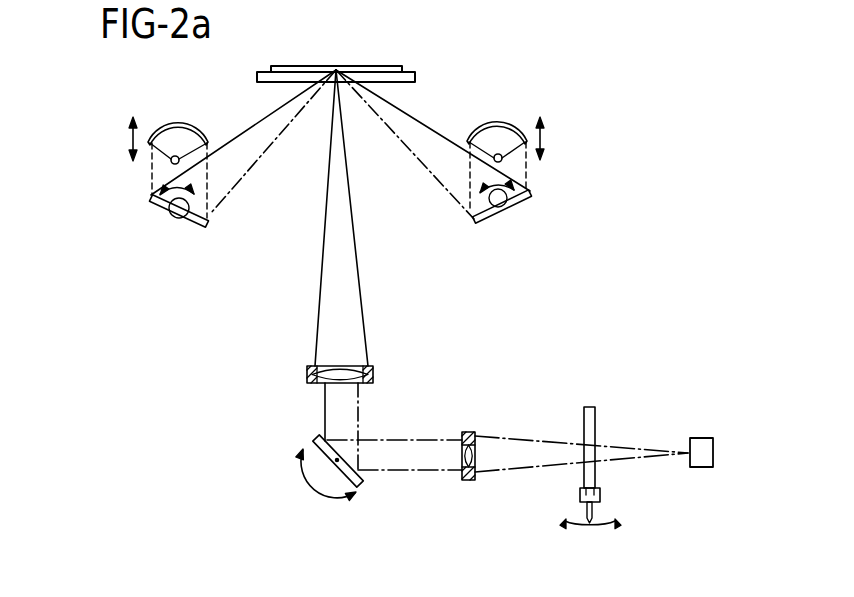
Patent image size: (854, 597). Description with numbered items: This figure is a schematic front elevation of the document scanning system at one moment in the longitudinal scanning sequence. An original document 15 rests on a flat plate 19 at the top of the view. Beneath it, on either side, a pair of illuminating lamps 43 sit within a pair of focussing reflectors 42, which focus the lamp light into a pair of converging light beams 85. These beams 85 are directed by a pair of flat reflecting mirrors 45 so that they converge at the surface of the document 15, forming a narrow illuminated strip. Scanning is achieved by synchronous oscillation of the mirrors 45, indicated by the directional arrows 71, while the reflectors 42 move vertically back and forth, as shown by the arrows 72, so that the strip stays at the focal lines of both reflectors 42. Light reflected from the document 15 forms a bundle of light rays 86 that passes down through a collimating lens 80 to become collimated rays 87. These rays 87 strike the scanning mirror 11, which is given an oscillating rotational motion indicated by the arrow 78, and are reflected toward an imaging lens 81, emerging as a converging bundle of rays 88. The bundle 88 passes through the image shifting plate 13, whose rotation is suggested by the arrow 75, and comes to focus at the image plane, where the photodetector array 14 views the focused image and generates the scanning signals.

The scanning mirror 11 is at (366, 458).
The image shifting plate 13 is at (596, 424).
The photodetector array 14 is at (705, 438).
The original document 15 is at (385, 66).
The flat plate 19 is at (414, 73).
The focussing reflector 42 is at (184, 124).
The illuminating lamp 43 is at (258, 122).
The flat reflecting mirror 45 is at (209, 221).
The directional arrow 71 is at (168, 207).
The arrow 72 is at (131, 140).
The rotation arrow 75 is at (614, 528).
The arrow 78 is at (320, 490).
The collimating lens 80 is at (374, 368).
The imaging lens 81 is at (465, 432).
The converging light beam 85 is at (236, 149).
The bundle of light rays 86 is at (340, 302).
The collimated rays 87 is at (342, 400).
The converging bundle of rays 88 is at (547, 456).